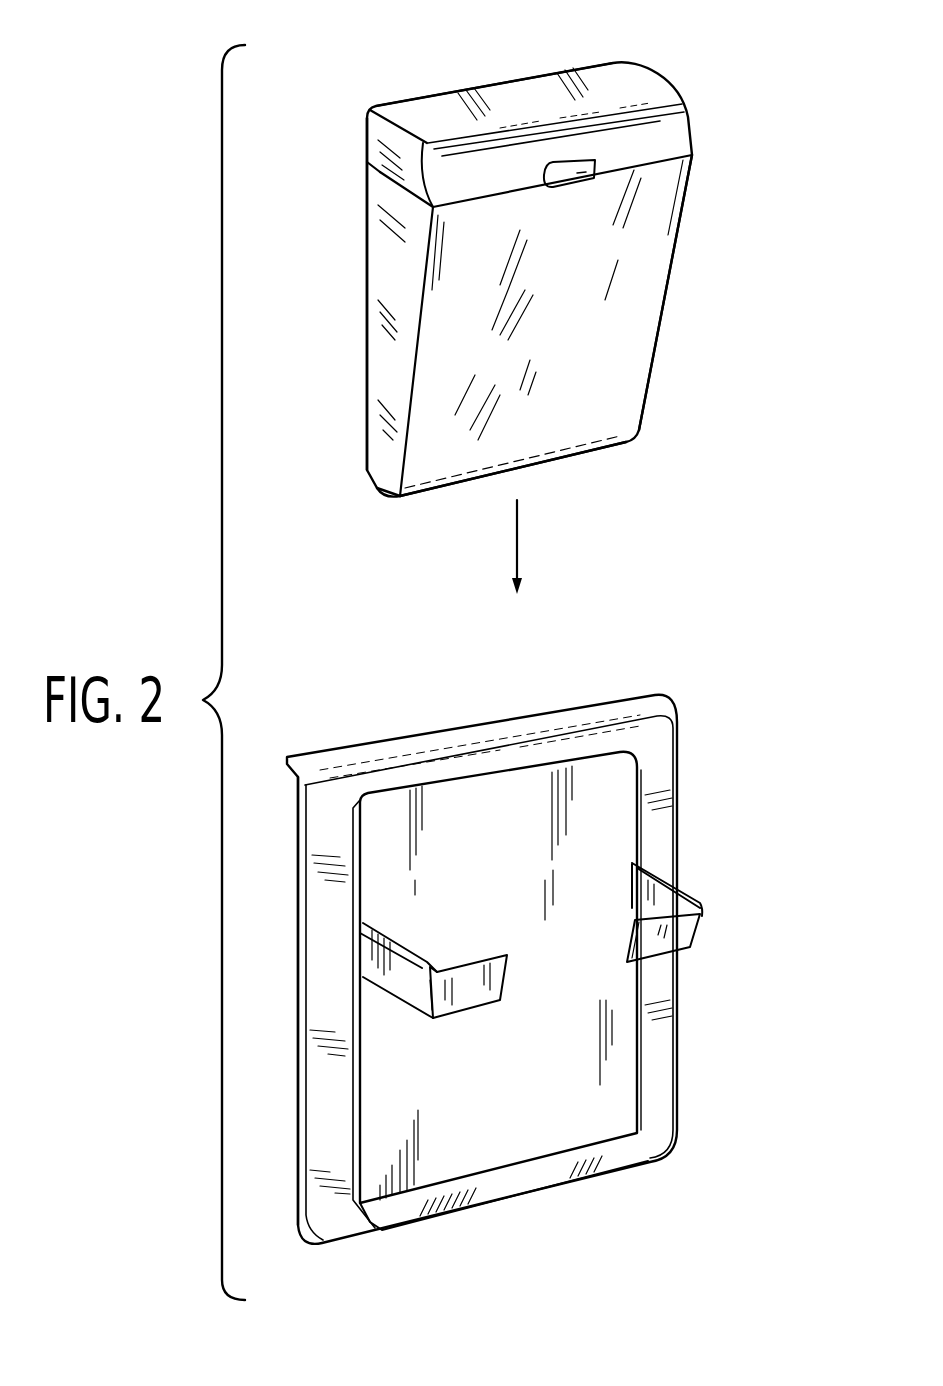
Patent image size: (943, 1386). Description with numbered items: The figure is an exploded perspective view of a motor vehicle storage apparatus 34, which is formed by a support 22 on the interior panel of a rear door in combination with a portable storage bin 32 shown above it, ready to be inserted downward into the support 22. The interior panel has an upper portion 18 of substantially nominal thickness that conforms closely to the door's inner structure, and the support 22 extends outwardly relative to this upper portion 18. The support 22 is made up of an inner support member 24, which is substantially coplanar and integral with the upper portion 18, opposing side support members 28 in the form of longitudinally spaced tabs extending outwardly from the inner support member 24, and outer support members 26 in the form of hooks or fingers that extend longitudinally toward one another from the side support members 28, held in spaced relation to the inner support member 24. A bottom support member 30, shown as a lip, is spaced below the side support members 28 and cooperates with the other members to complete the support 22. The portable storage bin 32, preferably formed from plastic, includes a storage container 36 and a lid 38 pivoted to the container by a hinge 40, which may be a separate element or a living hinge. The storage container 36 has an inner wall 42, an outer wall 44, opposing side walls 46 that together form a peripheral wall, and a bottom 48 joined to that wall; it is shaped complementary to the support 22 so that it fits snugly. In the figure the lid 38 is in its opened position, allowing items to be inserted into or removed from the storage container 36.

The upper portion 18 is at (597, 786).
The support 22 is at (320, 1142).
The inner support member 24 is at (610, 1077).
The outer support member 26 is at (690, 935).
The side support member 28 is at (640, 887).
The bottom support member 30 is at (520, 1177).
The portable storage bin 32 is at (706, 260).
The motor vehicle storage apparatus 34 is at (700, 614).
The storage container 36 is at (684, 341).
The lid 38 is at (676, 76).
The hinge 40 is at (352, 152).
The inner wall 42 is at (367, 273).
The outer wall 44 is at (608, 398).
The side wall 46 is at (683, 208).
The bottom 48 is at (567, 457).